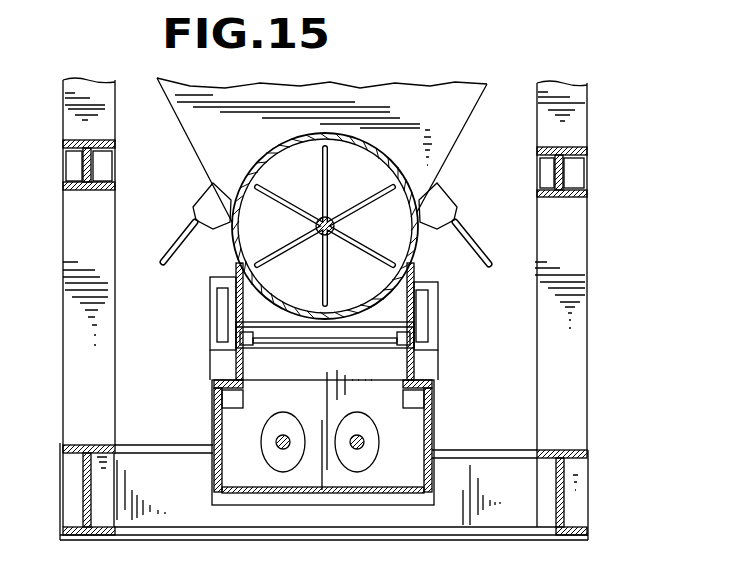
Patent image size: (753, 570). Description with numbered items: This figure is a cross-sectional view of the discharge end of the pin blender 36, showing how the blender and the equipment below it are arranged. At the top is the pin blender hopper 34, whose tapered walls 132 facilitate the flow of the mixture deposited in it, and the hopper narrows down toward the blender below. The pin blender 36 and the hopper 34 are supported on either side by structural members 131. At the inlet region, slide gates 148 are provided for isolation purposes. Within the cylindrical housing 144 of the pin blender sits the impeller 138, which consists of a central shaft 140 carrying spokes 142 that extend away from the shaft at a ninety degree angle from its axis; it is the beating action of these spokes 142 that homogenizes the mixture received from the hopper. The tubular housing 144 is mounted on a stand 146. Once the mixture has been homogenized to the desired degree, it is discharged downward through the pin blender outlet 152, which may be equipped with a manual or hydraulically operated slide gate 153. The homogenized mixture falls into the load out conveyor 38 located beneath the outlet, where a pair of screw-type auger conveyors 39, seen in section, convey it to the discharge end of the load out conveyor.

The hopper 34 is at (427, 86).
The tapered walls 132 is at (462, 128).
The structural members 131 is at (588, 153).
The slide gates 148 is at (178, 242).
The spokes 142 is at (262, 184).
The pin blender 36 is at (203, 247).
The impeller 138 is at (348, 229).
The central shaft 140 is at (333, 240).
The cylindrical housing 144 is at (417, 262).
The stand 146 is at (436, 321).
The slide gate 153 is at (385, 348).
The pin blender outlet 152 is at (304, 355).
The screw-type auger conveyors 39 is at (262, 452).
The load out conveyor 38 is at (430, 457).